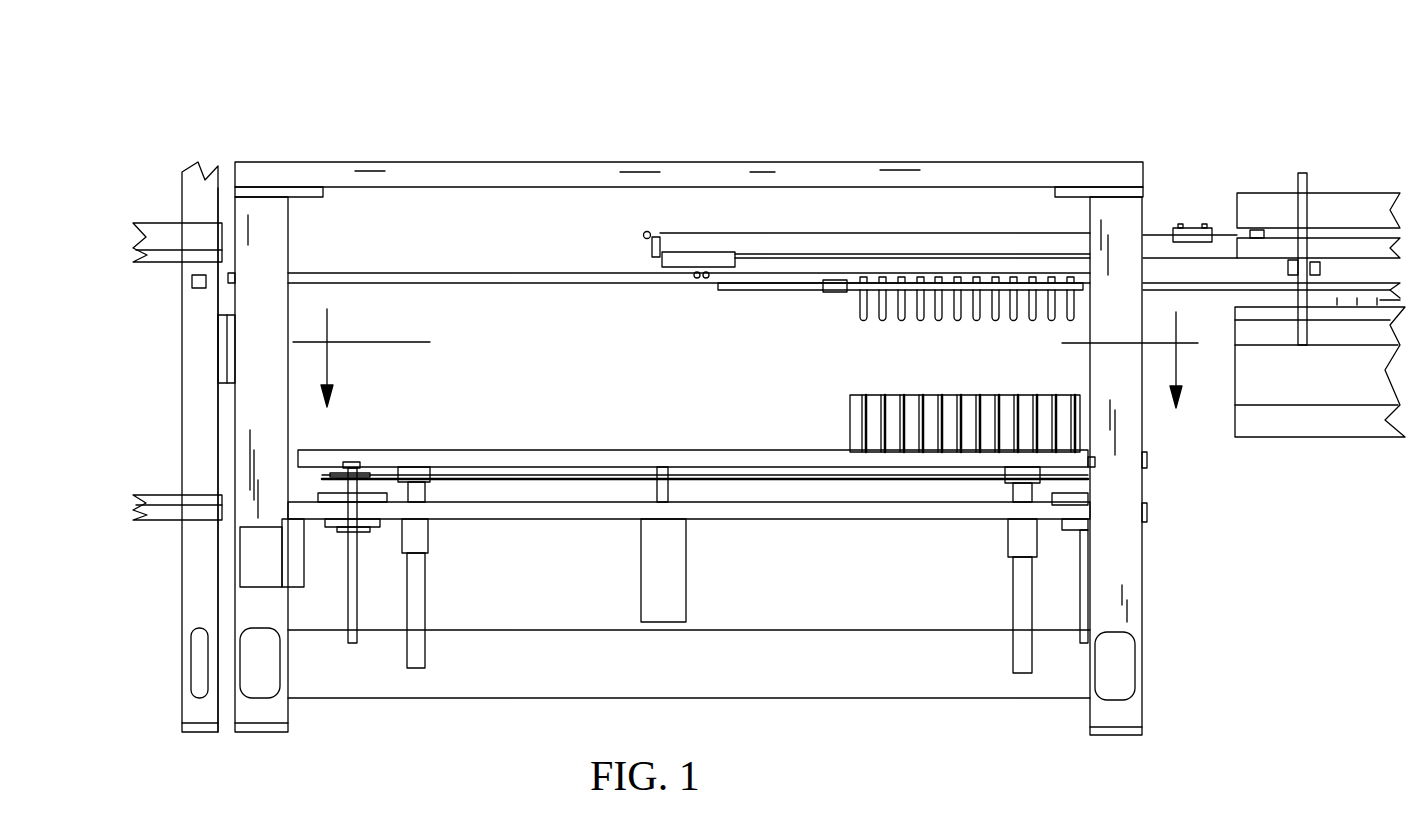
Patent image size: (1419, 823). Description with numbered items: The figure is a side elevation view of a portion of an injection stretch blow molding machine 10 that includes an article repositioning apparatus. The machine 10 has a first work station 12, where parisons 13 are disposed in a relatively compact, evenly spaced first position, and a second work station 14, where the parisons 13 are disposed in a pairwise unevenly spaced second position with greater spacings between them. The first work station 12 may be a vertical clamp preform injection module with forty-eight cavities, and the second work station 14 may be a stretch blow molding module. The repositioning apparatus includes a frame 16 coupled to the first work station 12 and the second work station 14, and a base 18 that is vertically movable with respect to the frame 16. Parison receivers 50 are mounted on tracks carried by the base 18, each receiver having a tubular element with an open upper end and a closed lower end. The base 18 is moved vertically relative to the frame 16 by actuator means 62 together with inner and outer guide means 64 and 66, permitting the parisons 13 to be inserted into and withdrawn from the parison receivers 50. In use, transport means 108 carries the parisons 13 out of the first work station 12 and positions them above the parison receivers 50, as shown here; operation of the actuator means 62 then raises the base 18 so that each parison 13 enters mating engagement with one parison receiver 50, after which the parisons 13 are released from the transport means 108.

The injection stretch blow molding machine 10 is at (1190, 91).
The first work station 12 is at (1345, 423).
The parisons 13 is at (880, 322).
The second work station 14 is at (196, 715).
The frame 16 is at (1090, 510).
The base 18 is at (540, 460).
The parison receivers 50 is at (875, 392).
The actuator means 62 is at (668, 597).
The inner guide means 64 is at (688, 485).
The outer guide means 66 is at (348, 638).
The transport means 108 is at (867, 245).